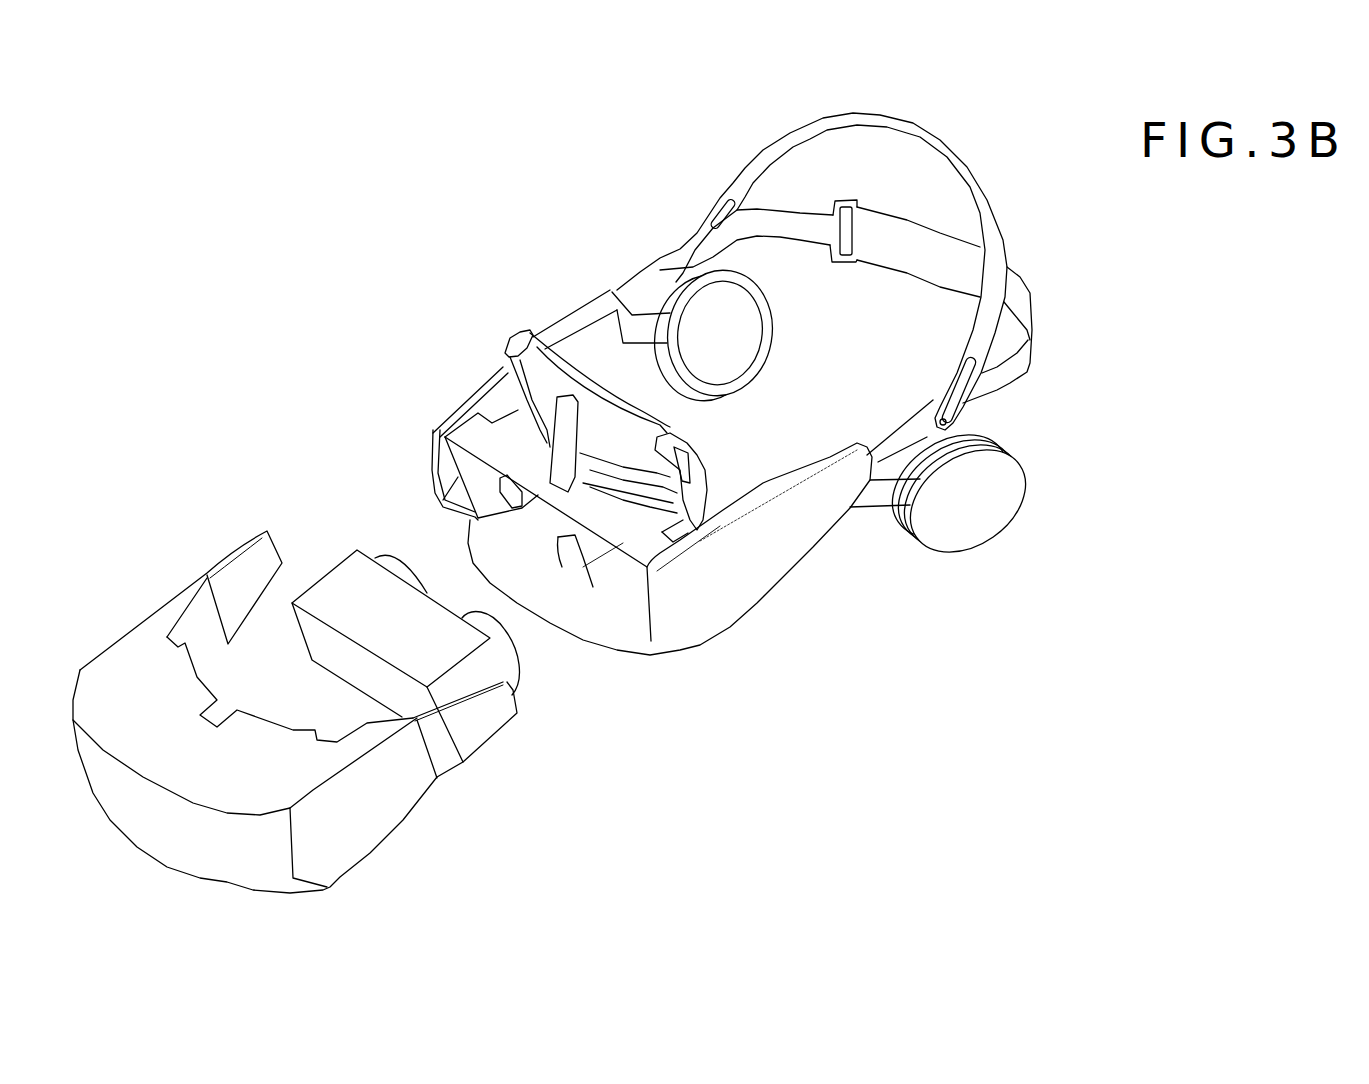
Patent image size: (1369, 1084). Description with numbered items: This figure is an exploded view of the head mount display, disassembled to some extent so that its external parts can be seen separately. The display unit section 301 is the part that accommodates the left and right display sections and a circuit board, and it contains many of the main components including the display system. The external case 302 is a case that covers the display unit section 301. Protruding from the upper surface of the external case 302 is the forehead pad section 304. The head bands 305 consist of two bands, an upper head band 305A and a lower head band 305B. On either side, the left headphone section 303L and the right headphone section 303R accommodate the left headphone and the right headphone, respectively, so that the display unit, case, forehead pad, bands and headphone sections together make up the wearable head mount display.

The display unit section 301 is at (430, 663).
The external case 302 is at (117, 670).
The left headphone section 303L is at (965, 540).
The right headphone section 303R is at (711, 322).
The forehead pad section 304 is at (547, 377).
The head bands 305 is at (820, 197).
The upper head band 305A is at (980, 180).
The lower head band 305B is at (1031, 293).